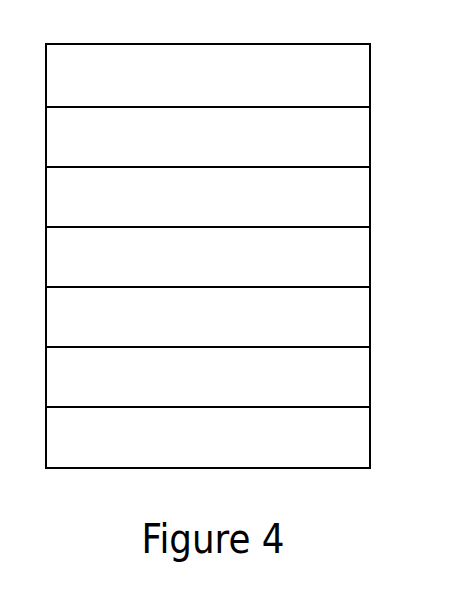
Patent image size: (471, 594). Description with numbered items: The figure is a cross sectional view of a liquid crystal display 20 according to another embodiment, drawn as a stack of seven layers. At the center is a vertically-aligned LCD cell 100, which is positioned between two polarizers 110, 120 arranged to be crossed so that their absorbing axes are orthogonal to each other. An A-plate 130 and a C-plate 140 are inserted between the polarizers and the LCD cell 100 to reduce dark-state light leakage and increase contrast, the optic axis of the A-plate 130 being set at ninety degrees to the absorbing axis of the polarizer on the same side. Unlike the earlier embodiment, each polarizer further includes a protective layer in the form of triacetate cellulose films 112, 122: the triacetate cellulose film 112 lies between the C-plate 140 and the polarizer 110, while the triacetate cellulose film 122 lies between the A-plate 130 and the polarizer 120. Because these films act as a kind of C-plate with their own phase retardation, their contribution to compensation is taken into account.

The liquid crystal display 20 is at (232, 38).
The polarizer 120 is at (208, 75).
The triacetate cellulose film 122 is at (208, 137).
The A-plate 130 is at (208, 197).
The vertically-aligned LCD cell 100 is at (208, 257).
The C-plate 140 is at (208, 317).
The triacetate cellulose film 112 is at (208, 377).
The polarizer 110 is at (208, 437).